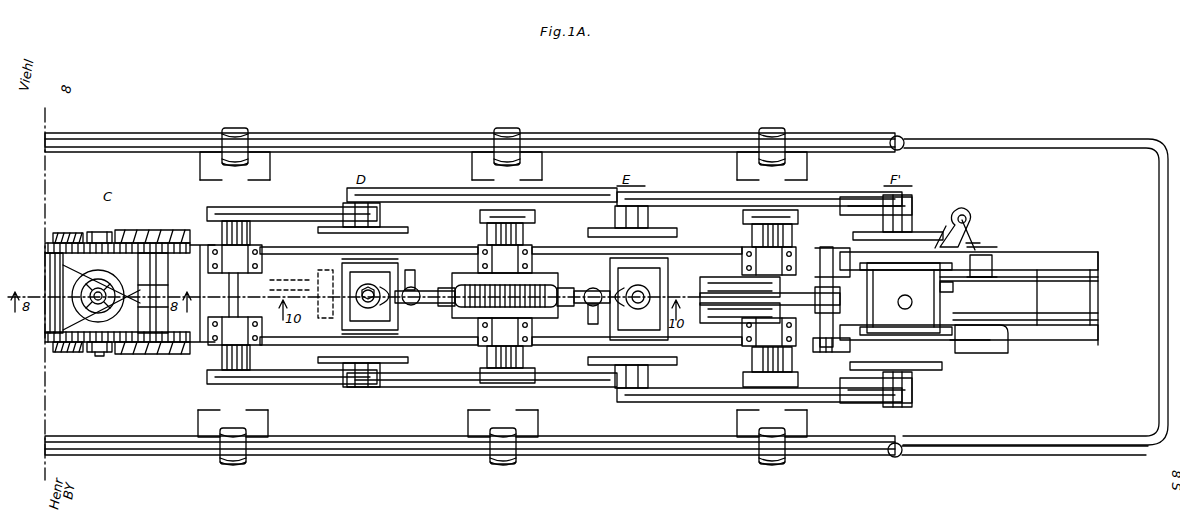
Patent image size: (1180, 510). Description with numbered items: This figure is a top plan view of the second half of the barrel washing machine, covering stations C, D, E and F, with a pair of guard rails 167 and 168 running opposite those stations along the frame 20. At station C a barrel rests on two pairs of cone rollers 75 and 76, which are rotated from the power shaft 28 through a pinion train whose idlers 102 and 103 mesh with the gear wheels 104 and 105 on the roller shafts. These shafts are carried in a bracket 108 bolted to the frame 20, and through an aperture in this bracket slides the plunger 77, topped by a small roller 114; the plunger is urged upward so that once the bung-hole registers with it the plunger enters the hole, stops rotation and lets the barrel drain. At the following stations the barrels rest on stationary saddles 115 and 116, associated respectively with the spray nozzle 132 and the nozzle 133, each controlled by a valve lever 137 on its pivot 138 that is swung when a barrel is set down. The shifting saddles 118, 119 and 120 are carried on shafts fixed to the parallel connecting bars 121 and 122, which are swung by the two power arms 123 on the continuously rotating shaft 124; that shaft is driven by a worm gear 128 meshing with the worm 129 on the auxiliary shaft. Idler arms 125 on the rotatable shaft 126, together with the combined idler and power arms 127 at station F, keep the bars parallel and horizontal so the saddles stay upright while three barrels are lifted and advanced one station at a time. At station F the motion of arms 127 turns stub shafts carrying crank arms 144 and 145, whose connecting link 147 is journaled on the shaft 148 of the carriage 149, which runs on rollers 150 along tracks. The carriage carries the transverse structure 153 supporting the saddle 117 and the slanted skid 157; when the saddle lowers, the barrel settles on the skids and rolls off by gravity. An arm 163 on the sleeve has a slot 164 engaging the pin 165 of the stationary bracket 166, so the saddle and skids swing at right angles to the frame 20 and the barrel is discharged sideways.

The guard rail 168 is at (618, 138).
The guard rail 167 is at (449, 456).
The gear wheel 104 is at (45, 246).
The cone rollers 75 is at (66, 240).
The idler 103 is at (92, 232).
The cone rollers 76 is at (150, 240).
The gear wheel 105 is at (120, 272).
The plunger 77 is at (104, 286).
The bracket 108 is at (160, 268).
The roller 114 is at (76, 352).
The idler 102 is at (100, 352).
The frame 20 is at (197, 342).
The stationary saddle 115 is at (400, 250).
The stationary saddle 116 is at (672, 250).
The idler arms 125 is at (290, 214).
The rotatable shaft 126 is at (236, 280).
The shaft 28 is at (301, 294).
The shifting saddle 118 is at (385, 222).
The nozzle 132 is at (362, 300).
The lever 137 is at (414, 306).
The pivot 138 is at (428, 302).
The worm gear 128 is at (540, 290).
The worm 129 is at (536, 282).
The shaft 124 is at (490, 211).
The power arms 123 is at (572, 210).
The connecting bar 122 is at (692, 199).
The connecting bar 121 is at (662, 396).
The shifting saddle 119 is at (680, 233).
The nozzle 133 is at (625, 288).
The crank arm 144 is at (730, 283).
The crank arm 145 is at (728, 315).
The connecting link 147 is at (803, 290).
The shaft 148 is at (818, 318).
The carriage 149 is at (818, 353).
The combined idler and power arms 127 is at (844, 205).
The shifting saddle 120 is at (925, 232).
The saddle 117 is at (898, 270).
The transverse structure 153 is at (953, 287).
The rollers 150 is at (982, 255).
The skid 157 is at (951, 352).
The arm 163 is at (970, 238).
The slot 164 is at (947, 236).
The pin 165 is at (964, 219).
The bracket 166 is at (972, 236).